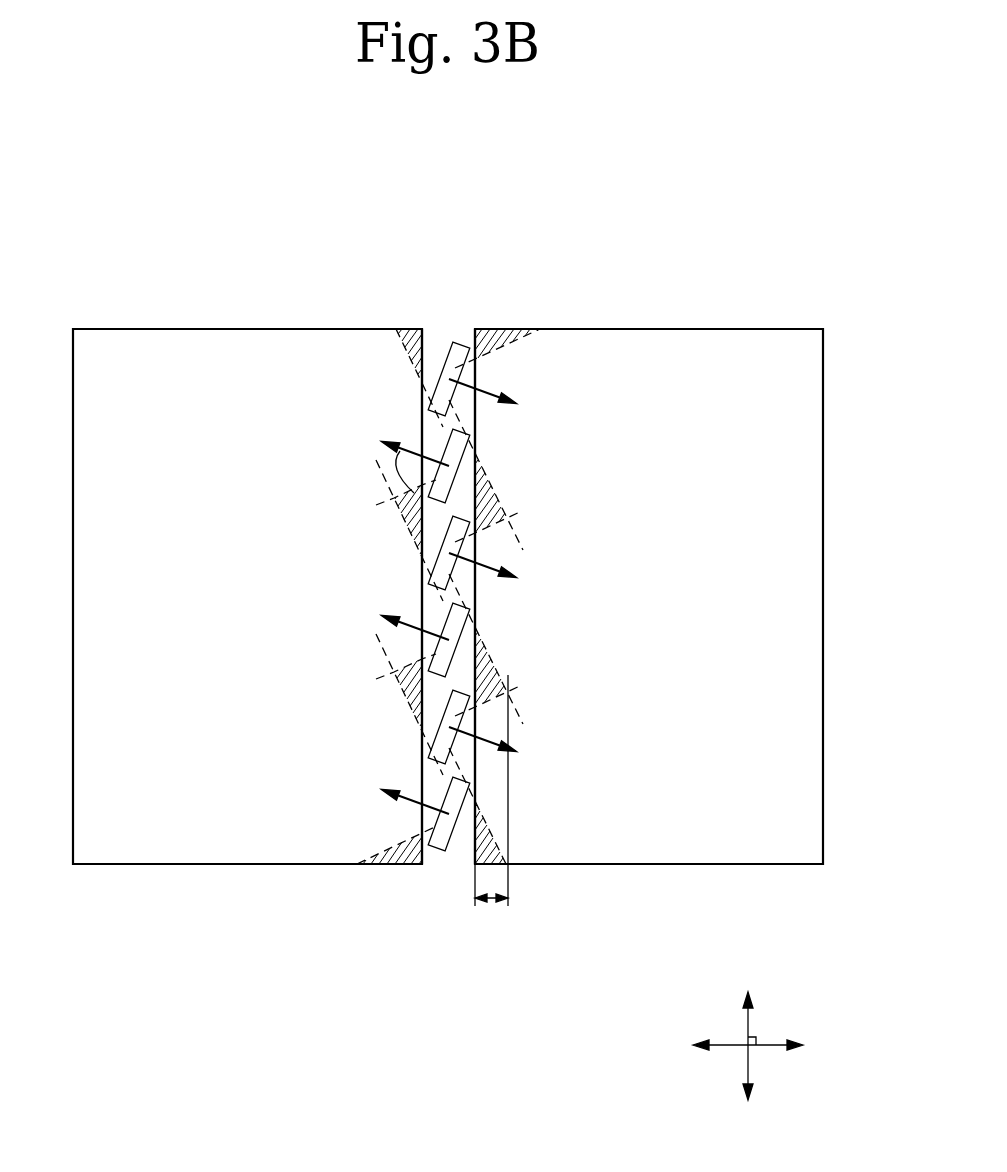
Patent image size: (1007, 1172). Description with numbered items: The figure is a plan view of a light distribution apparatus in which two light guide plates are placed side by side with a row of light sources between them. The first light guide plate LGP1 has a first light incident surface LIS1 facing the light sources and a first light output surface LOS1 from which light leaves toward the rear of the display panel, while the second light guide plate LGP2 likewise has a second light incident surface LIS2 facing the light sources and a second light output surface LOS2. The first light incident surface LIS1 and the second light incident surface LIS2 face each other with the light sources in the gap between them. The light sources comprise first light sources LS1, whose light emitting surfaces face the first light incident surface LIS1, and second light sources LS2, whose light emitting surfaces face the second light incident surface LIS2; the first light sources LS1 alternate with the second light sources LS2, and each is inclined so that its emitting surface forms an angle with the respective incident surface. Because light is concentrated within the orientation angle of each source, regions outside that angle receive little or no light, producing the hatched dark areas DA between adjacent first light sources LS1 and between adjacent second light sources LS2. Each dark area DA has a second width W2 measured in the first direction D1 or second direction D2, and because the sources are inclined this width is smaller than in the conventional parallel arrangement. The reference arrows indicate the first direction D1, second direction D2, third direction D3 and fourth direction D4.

The first light guide plate LGP1 is at (129, 325).
The second light guide plate LGP2 is at (779, 325).
The first light output surface LOS1 is at (240, 343).
The second light output surface LOS2 is at (670, 343).
The first light incident surface LIS1 is at (424, 351).
The second light incident surface LIS2 is at (473, 350).
The dark area DA is at (518, 330).
The first light source LS1 is at (438, 818).
The second light source LS2 is at (438, 731).
The second width W2 is at (492, 802).
The first direction D1 is at (702, 1045).
The second direction D2 is at (793, 1045).
The third direction D3 is at (748, 1004).
The fourth direction D4 is at (748, 1087).